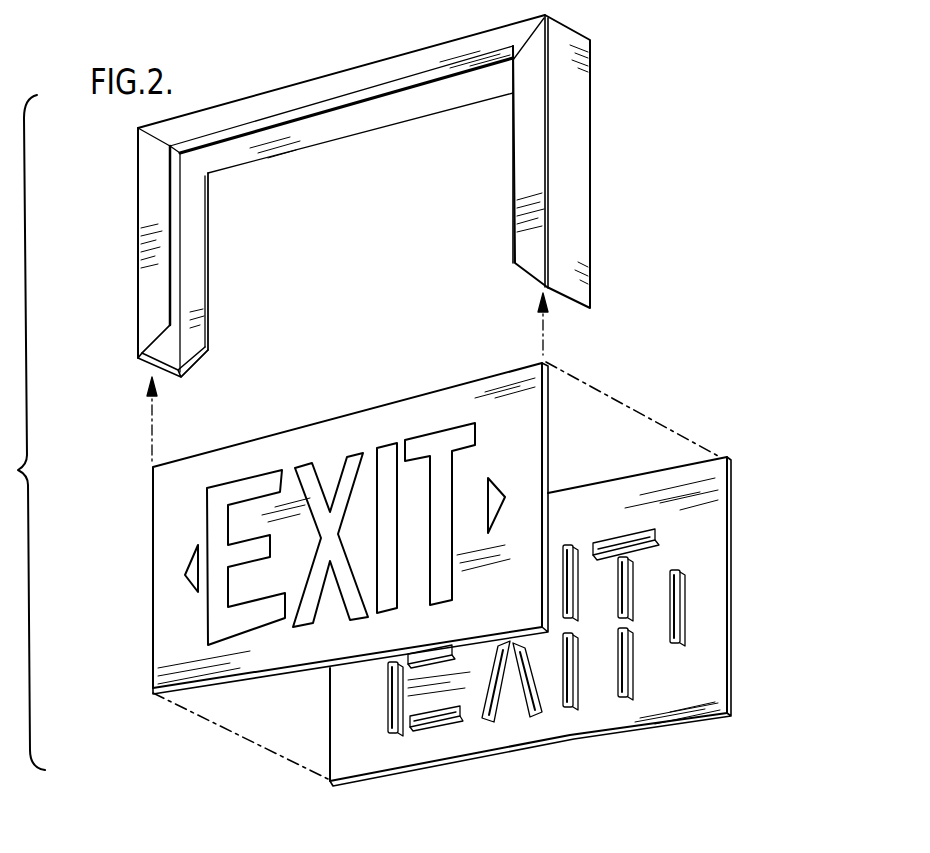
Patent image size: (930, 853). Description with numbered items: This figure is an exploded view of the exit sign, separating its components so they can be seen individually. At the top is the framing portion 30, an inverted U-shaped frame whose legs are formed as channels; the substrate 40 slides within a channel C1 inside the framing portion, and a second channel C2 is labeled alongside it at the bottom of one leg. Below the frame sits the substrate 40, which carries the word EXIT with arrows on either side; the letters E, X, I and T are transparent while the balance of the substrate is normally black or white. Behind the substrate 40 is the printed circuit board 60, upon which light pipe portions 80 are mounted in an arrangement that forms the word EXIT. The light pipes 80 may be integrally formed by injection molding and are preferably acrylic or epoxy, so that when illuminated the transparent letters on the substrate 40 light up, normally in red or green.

The framing portion 30 is at (598, 108).
The substrate 40 is at (547, 408).
The printed circuit board 60 is at (724, 503).
The light pipe portions 80 is at (683, 600).
The channel C1 is at (168, 350).
The second channel flange C2 is at (192, 328).